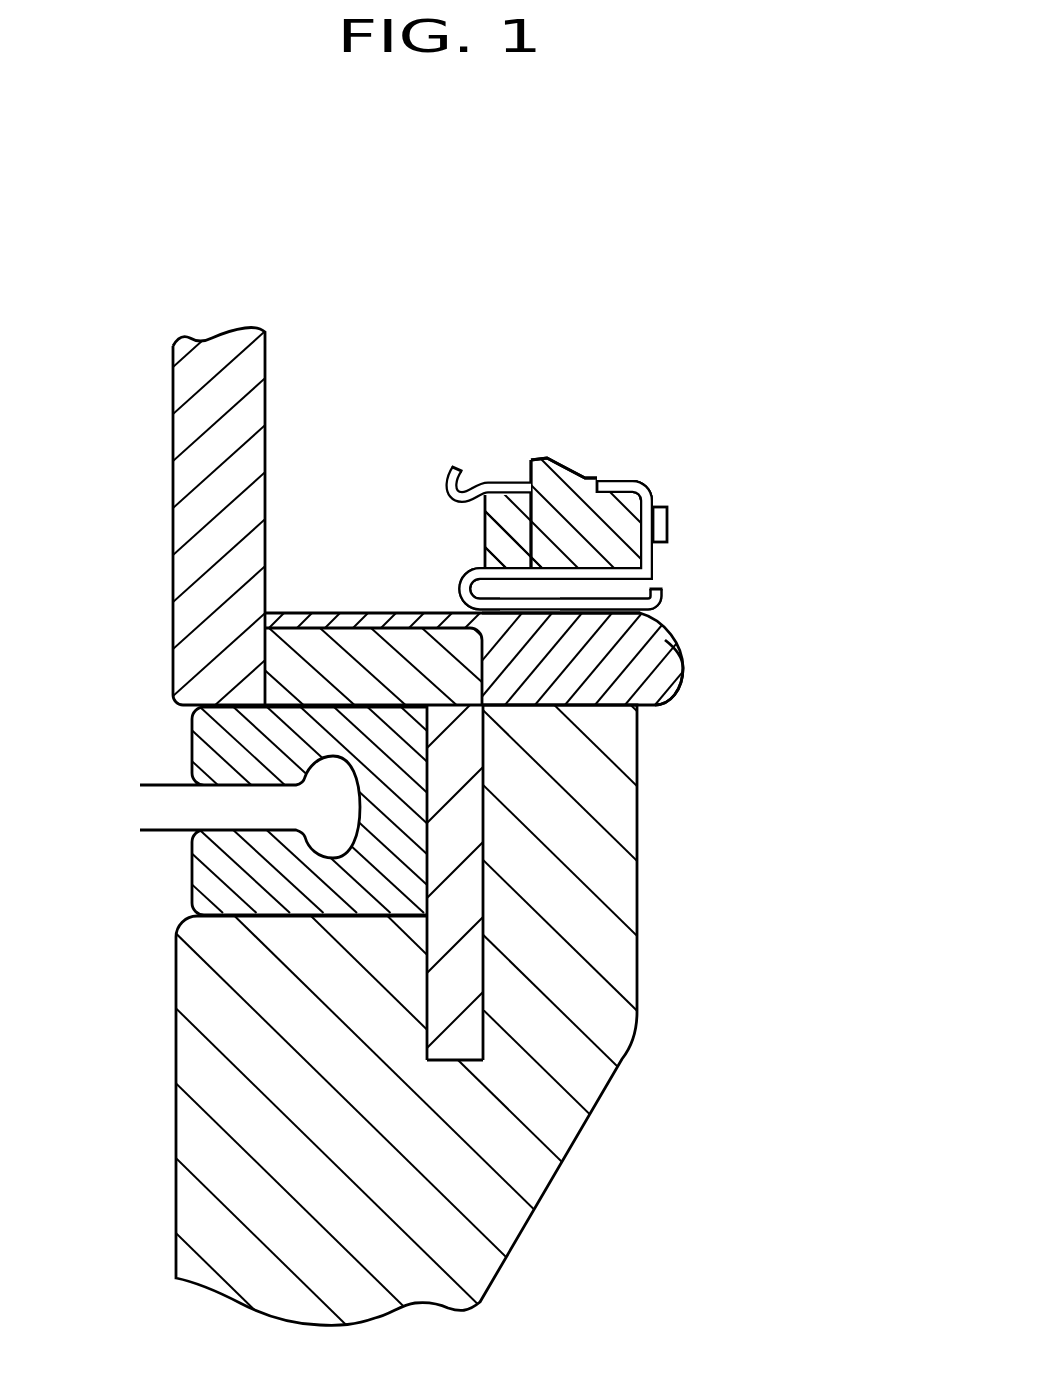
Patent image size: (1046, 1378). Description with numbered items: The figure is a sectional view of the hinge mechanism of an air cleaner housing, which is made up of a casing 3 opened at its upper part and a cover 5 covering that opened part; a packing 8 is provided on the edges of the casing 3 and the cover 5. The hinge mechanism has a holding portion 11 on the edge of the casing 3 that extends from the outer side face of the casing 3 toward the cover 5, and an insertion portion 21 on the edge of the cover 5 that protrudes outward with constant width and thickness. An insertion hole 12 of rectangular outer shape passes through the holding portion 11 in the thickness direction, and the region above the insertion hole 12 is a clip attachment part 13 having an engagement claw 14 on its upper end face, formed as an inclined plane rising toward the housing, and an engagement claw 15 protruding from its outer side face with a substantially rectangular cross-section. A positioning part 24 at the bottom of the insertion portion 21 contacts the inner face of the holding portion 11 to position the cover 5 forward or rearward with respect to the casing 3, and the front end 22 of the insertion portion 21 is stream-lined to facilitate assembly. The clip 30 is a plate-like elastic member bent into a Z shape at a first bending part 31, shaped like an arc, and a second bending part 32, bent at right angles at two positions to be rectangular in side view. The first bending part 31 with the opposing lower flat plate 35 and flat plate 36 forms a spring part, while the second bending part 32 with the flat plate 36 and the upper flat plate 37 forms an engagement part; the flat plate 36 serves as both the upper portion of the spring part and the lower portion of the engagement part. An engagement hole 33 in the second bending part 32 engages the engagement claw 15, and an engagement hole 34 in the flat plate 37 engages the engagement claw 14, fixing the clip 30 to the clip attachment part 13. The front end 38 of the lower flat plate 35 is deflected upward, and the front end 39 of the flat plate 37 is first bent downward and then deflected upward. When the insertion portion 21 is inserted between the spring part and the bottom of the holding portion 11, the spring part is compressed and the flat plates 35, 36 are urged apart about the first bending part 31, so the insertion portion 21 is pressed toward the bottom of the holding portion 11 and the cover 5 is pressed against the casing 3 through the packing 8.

The casing 3 is at (177, 1113).
The cover 5 is at (173, 441).
The packing 8 is at (192, 872).
The holding portion 11 is at (648, 777).
The insertion hole 12 is at (622, 592).
The clip attachment part 13 is at (484, 532).
The engagement claw 14 is at (550, 462).
The engagement claw 15 is at (668, 510).
The insertion portion 21 is at (667, 638).
The front end 22 is at (682, 683).
The positioning part 24 is at (317, 648).
The clip 30 is at (632, 477).
The first bending part 31 is at (462, 592).
The second bending part 32 is at (657, 497).
The engagement hole 33 is at (667, 522).
The engagement hole 34 is at (587, 482).
The lower flat plate 35 is at (562, 608).
The flat plate 36 is at (518, 567).
The upper flat plate 37 is at (523, 483).
The front end 38 is at (657, 592).
The front end 39 is at (452, 462).